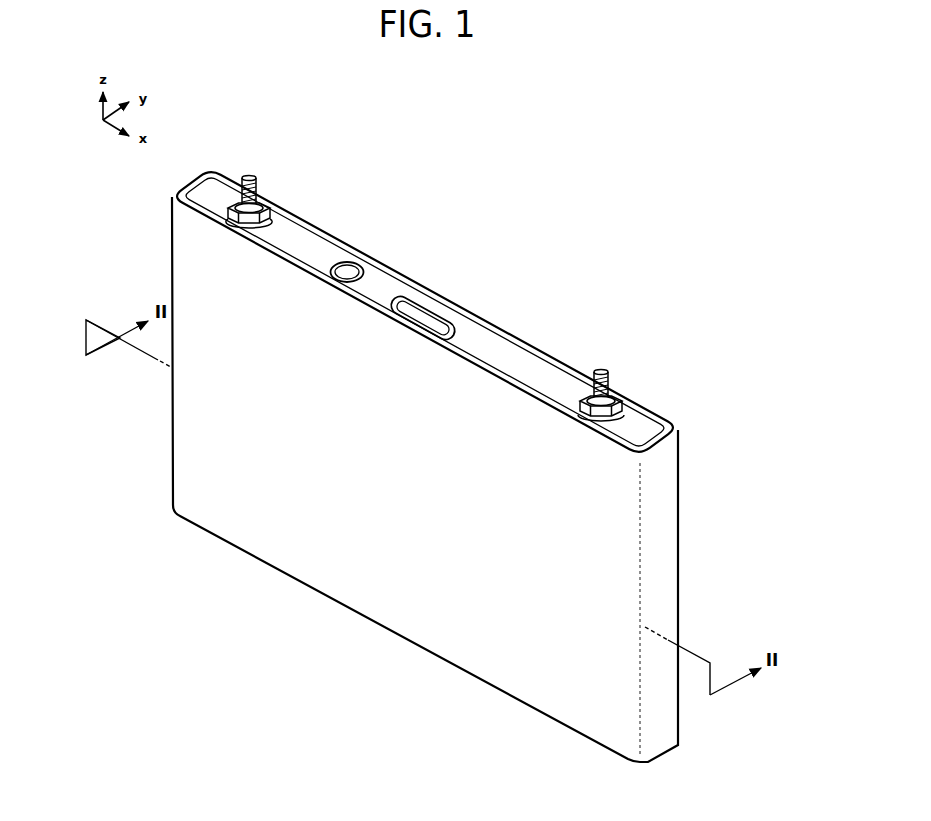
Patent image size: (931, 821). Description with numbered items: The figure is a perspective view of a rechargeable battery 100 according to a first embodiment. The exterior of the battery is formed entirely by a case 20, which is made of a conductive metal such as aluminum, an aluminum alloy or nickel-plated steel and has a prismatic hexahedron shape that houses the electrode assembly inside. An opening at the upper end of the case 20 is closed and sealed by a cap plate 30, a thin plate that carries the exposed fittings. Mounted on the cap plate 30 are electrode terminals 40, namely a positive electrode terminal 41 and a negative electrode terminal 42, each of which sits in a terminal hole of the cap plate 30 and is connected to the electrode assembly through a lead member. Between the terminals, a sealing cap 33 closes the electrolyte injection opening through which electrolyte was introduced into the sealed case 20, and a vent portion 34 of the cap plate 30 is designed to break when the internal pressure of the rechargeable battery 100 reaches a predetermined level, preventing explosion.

The rechargeable battery 100 is at (506, 286).
The case 20 is at (383, 603).
The cap plate 30 is at (394, 270).
The sealing cap 33 is at (346, 270).
The vent portion 34 is at (428, 312).
The electrode terminal 40 is at (427, 272).
The positive electrode terminal 41 is at (247, 178).
The negative electrode terminal 42 is at (602, 372).